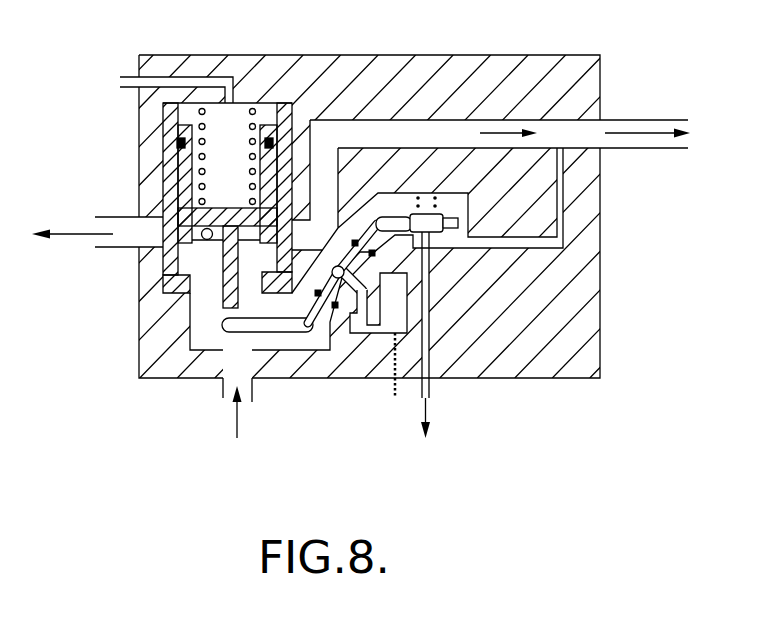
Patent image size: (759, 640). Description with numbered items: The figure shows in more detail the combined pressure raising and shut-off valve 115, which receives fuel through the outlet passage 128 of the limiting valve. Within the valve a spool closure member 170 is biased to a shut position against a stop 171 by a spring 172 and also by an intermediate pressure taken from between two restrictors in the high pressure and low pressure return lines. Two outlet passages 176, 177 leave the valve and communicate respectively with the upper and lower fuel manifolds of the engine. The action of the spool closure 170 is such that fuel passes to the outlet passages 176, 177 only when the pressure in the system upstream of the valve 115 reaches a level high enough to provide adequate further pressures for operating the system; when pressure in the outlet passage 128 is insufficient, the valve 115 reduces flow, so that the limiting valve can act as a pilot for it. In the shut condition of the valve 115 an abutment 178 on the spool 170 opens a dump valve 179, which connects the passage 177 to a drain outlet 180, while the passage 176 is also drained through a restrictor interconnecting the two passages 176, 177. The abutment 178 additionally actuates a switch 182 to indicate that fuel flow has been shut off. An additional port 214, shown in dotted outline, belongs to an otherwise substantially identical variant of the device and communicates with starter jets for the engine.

The combined pressure raising and shut-off valve 115 is at (557, 394).
The outlet passage 128 is at (228, 386).
The spool closure member 170 is at (165, 182).
The stop 171 is at (172, 287).
The spring 172 is at (253, 128).
The outlet passage 176 is at (117, 238).
The outlet passage 177 is at (607, 130).
The abutment 178 is at (228, 299).
The dump valve 179 is at (442, 240).
The drain outlet 180 is at (432, 388).
The switch 182 is at (392, 313).
The additional port 214 is at (178, 221).